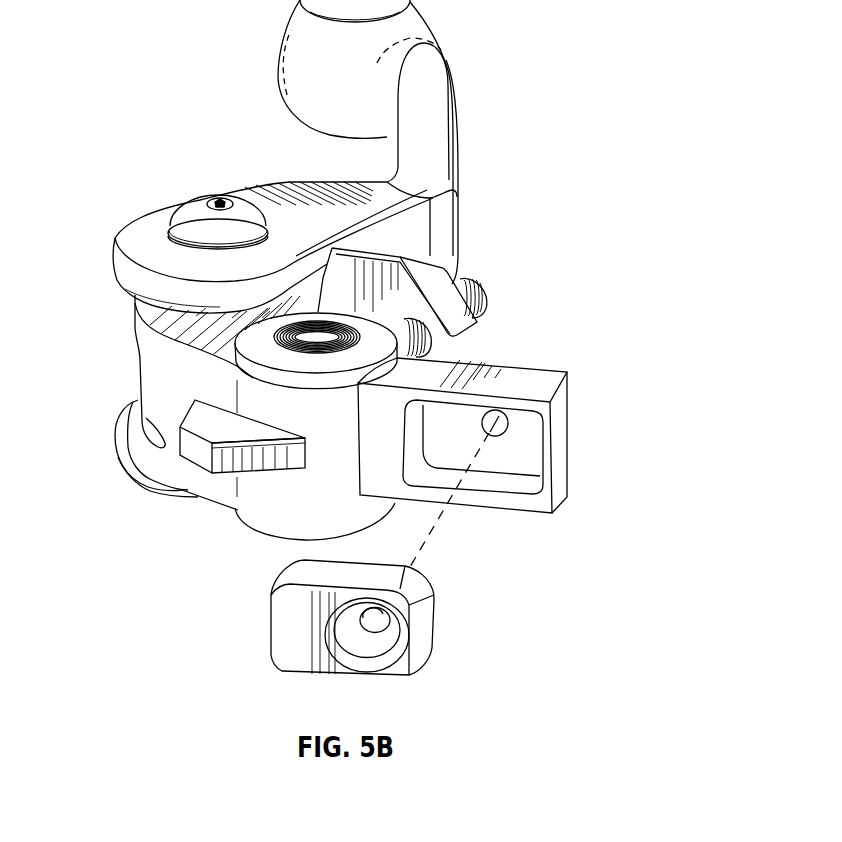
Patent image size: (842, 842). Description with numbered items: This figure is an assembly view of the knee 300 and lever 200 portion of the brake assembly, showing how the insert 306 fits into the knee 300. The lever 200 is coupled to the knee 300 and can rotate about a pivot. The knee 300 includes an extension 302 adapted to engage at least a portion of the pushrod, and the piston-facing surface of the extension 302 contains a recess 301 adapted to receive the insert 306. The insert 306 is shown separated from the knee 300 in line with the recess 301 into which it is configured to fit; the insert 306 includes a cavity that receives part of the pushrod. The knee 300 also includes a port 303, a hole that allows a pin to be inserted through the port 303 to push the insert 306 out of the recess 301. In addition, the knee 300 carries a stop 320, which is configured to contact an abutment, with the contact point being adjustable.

The lever 200 is at (432, 108).
The knee 300 is at (153, 322).
The recess 301 is at (445, 441).
The extension 302 is at (507, 387).
The port 303 is at (506, 430).
The insert 306 is at (425, 628).
The stop 320 is at (195, 420).